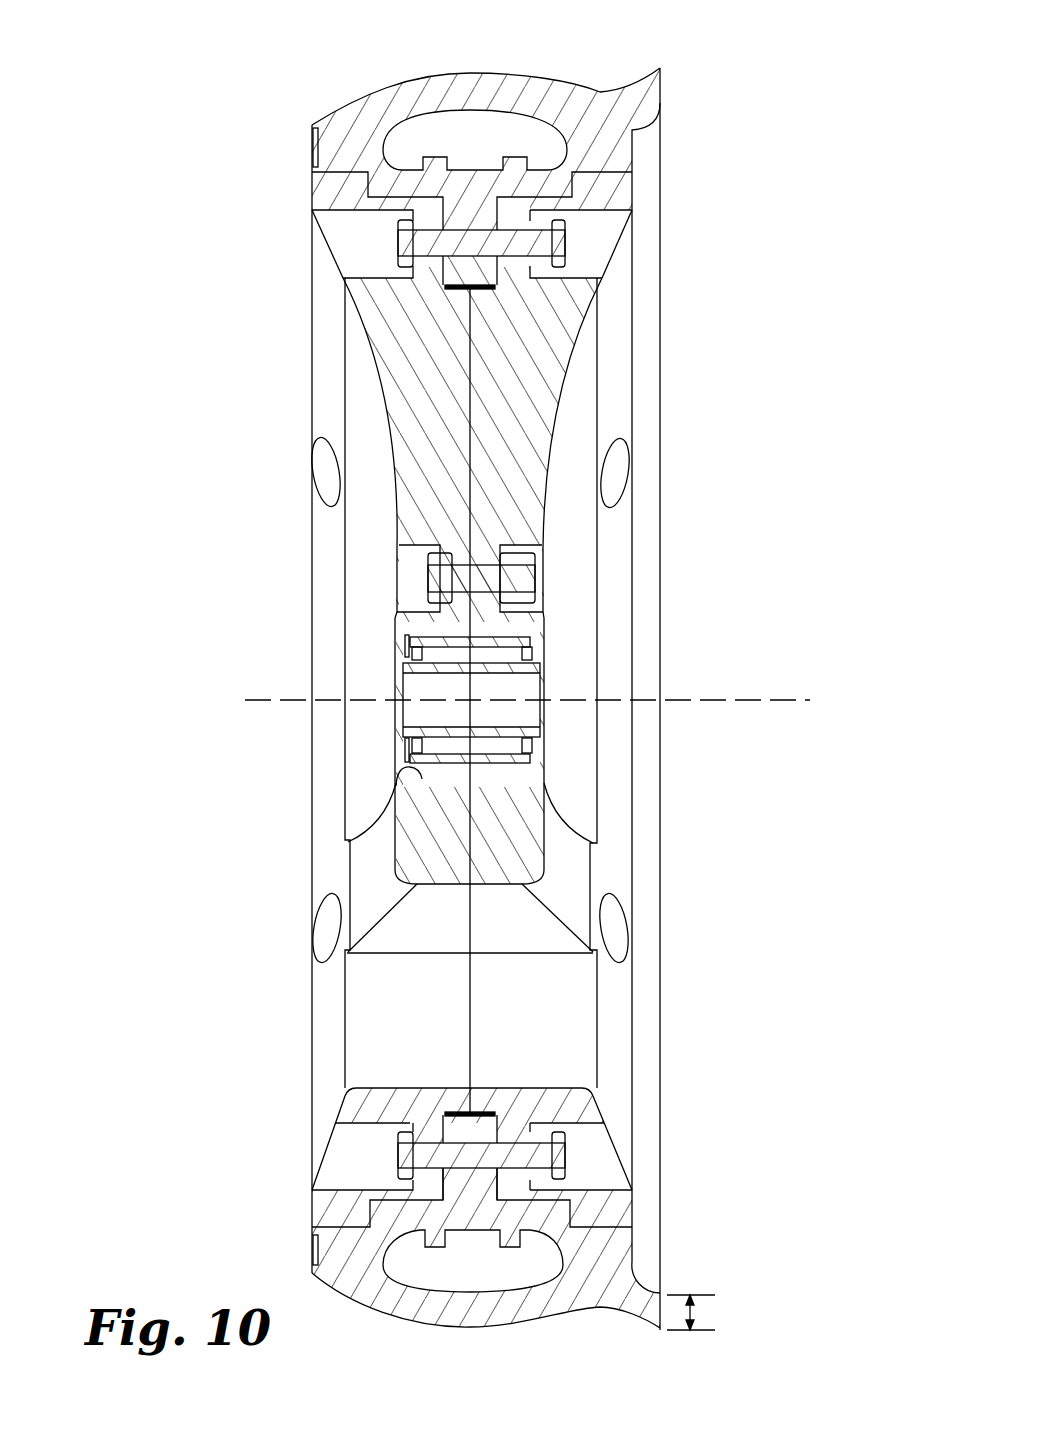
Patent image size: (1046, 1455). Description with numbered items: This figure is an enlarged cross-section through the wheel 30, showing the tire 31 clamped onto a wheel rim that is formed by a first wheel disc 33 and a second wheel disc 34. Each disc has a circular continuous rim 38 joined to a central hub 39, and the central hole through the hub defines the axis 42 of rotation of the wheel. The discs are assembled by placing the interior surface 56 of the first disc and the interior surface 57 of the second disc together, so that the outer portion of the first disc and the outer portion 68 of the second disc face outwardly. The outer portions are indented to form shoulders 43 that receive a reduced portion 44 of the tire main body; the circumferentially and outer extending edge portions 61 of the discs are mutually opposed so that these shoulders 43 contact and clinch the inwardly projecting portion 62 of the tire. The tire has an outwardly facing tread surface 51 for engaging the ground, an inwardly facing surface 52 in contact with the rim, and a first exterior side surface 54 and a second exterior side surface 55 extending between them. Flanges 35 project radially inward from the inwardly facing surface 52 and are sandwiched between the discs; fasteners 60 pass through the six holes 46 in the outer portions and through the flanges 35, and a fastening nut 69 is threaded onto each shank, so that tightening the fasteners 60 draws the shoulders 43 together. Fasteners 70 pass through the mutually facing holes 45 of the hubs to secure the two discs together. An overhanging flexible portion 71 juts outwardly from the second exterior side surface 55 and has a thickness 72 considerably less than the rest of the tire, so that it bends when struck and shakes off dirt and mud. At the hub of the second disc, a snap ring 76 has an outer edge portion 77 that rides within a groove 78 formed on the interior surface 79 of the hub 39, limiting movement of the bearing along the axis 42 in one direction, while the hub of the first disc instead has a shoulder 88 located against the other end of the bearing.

The wheel 30 is at (620, 50).
The tire 31 is at (362, 107).
The first wheel disc 33 is at (560, 340).
The second wheel disc 34 is at (380, 327).
The flanges 35 is at (455, 218).
The circular continuous rim 38 is at (622, 748).
The central hub 39 is at (440, 863).
The axis 42 is at (750, 695).
The shoulders 43 is at (573, 185).
The reduced portion 44 is at (557, 193).
The holes 45 is at (410, 602).
The holes 46 is at (357, 242).
The tread surface 51 is at (433, 1323).
The inwardly facing surface 52 is at (373, 1187).
The first exterior side surface 54 is at (318, 1250).
The second exterior side surface 55 is at (633, 1253).
The interior surface 56 is at (467, 430).
The interior surface 57 is at (473, 393).
The fasteners 60 is at (462, 243).
The edge portions 61 is at (330, 1193).
The inwardly projecting portion 62 is at (500, 1215).
The outer portion 68 is at (322, 536).
The fastening nut 69 is at (547, 223).
The fasteners 70 is at (455, 580).
The overhanging flexible portion 71 is at (625, 1307).
The thickness 72 is at (695, 1312).
The snap ring 76 is at (408, 748).
The outer edge portion 77 is at (407, 767).
The groove 78 is at (400, 782).
The interior surface 79 is at (463, 767).
The shoulder 88 is at (532, 758).